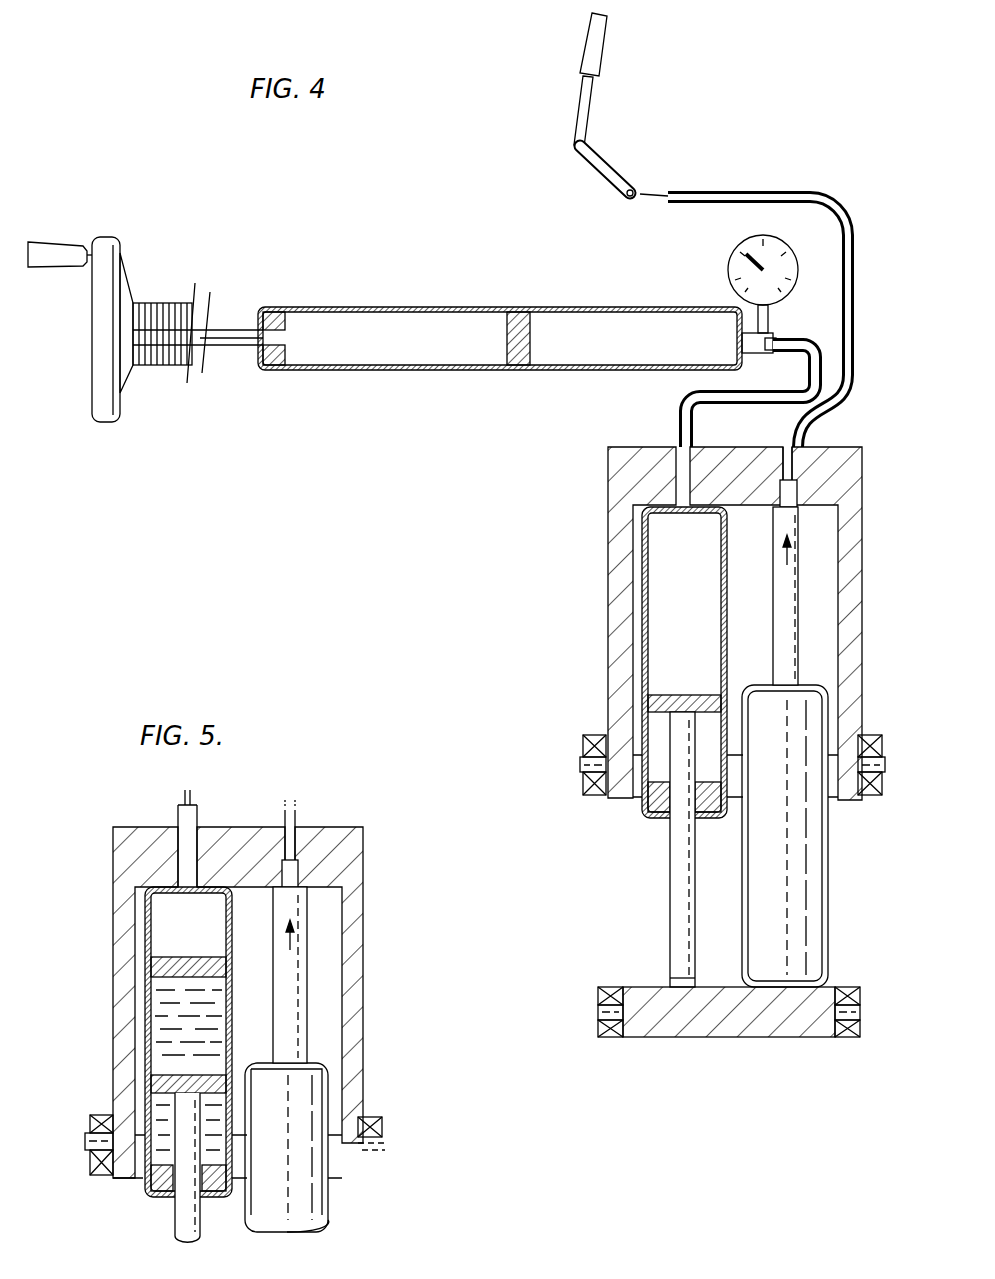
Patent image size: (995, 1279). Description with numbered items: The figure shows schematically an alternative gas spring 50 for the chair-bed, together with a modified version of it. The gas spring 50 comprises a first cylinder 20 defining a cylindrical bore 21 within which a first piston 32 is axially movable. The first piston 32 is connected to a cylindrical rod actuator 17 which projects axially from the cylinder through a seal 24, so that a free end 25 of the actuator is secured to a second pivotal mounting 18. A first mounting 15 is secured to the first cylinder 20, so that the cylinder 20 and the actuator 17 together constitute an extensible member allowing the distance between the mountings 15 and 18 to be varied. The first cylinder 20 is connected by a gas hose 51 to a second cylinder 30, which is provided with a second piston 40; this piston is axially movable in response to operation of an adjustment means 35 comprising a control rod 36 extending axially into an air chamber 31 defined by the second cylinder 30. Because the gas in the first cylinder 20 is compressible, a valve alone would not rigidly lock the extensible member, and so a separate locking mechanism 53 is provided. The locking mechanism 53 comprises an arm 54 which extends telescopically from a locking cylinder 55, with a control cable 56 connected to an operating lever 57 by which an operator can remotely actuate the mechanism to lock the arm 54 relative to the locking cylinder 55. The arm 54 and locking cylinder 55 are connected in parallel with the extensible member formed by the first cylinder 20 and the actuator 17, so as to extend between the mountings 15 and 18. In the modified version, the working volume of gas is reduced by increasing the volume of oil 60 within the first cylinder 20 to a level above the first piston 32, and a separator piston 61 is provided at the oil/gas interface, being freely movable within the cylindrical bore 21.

In FIG. 4, the first mounting 15 is at (583, 782).
In FIG. 5, the first mounting 15 is at (88, 1130).
In FIG. 4, the cylindrical rod actuator 17 is at (672, 898).
In FIG. 5, the cylindrical rod actuator 17 is at (180, 1222).
In FIG. 4, the second pivotal mounting 18 is at (600, 1020).
In FIG. 4, the first cylinder 20 is at (640, 585).
In FIG. 5, the first cylinder 20 is at (145, 915).
In FIG. 4, the cylindrical bore 21 is at (660, 620).
In FIG. 4, the seal 24 is at (640, 805).
In FIG. 5, the seal 24 is at (150, 1185).
In FIG. 4, the free end 25 is at (676, 978).
In FIG. 4, the second cylinder 30 is at (364, 297).
In FIG. 4, the air chamber 31 is at (592, 325).
In FIG. 4, the first piston 32 is at (650, 705).
In FIG. 5, the first piston 32 is at (150, 1080).
In FIG. 4, the adjustment means 35 is at (215, 226).
In FIG. 4, the control rod 36 is at (340, 335).
In FIG. 4, the second piston 40 is at (515, 330).
In FIG. 4, the gas spring 50 is at (472, 541).
In FIG. 4, the gas hose 51 is at (690, 400).
In FIG. 4, the locking mechanism 53 is at (815, 820).
In FIG. 5, the locking mechanism 53 is at (305, 1192).
In FIG. 4, the arm 54 is at (790, 615).
In FIG. 5, the arm 54 is at (300, 960).
In FIG. 4, the locking cylinder 55 is at (790, 925).
In FIG. 4, the control cable 56 is at (850, 375).
In FIG. 4, the operating lever 57 is at (548, 128).
In FIG. 5, the oil 60 is at (160, 1005).
In FIG. 5, the separator piston 61 is at (190, 955).